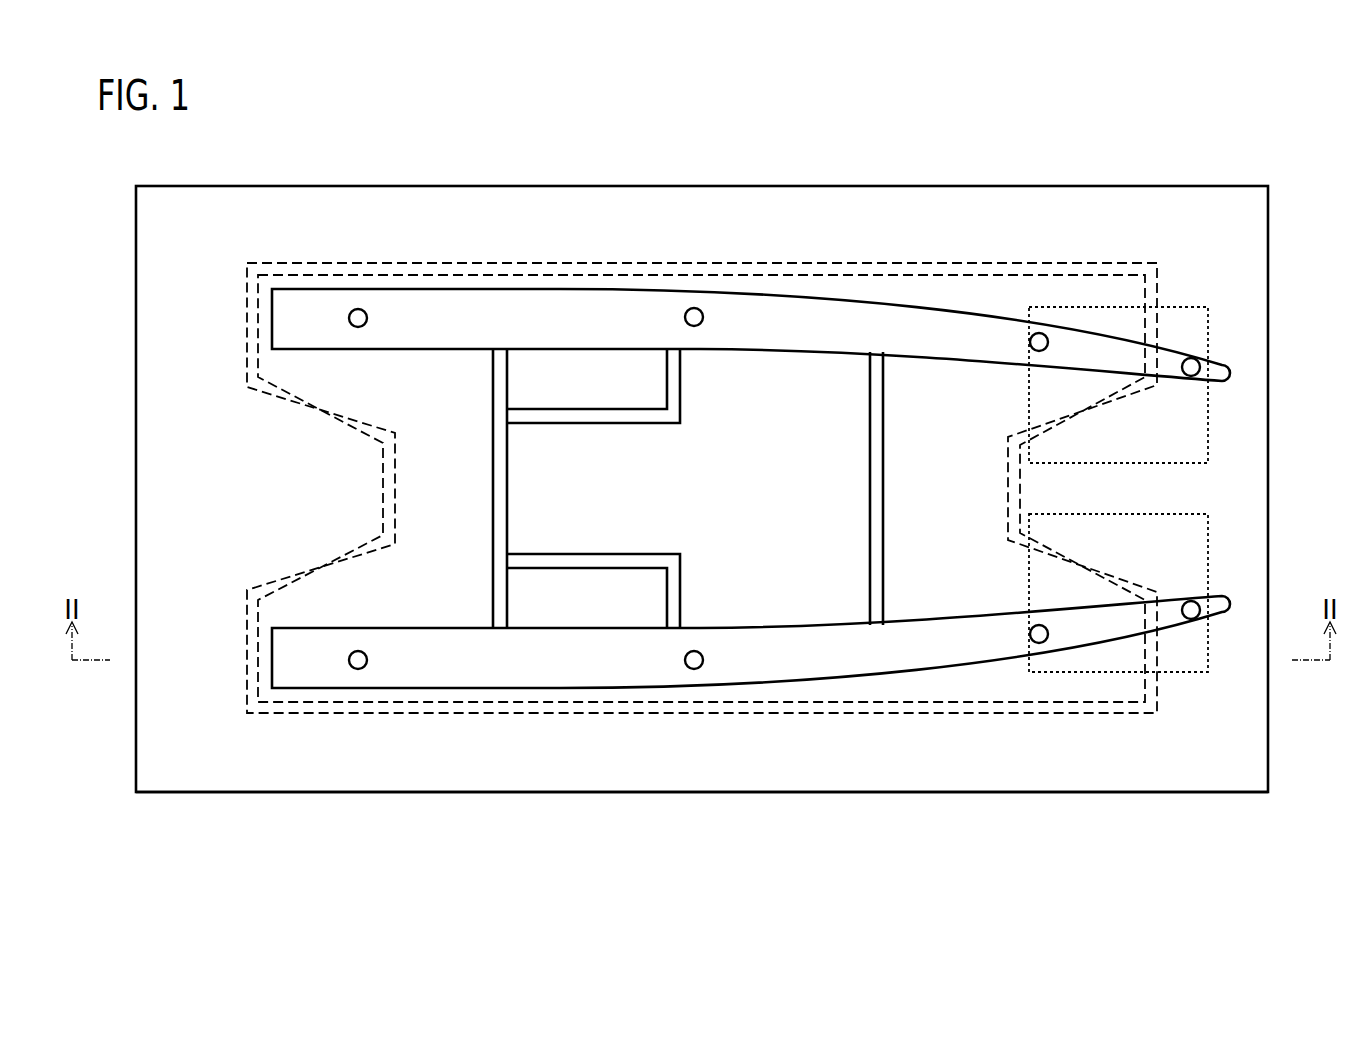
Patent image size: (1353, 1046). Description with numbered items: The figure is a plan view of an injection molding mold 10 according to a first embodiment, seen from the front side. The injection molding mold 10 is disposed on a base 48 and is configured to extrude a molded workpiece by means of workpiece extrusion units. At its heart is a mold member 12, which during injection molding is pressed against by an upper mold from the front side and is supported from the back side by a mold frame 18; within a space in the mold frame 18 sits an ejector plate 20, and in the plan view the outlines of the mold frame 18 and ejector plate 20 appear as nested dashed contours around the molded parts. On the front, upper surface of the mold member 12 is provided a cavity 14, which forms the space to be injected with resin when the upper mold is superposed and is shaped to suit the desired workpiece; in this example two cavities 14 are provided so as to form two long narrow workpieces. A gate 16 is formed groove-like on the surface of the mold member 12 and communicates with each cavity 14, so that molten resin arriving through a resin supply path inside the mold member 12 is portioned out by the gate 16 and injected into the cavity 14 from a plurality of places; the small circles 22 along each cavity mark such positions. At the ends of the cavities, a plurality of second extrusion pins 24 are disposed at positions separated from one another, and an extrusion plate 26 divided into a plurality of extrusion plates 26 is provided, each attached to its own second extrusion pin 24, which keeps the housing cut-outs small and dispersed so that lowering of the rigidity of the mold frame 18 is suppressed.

The injection molding mold 10 is at (248, 123).
The mold member 12 is at (757, 215).
The cavity 14 is at (590, 320).
The gate 16 is at (541, 415).
The mold frame 18 is at (438, 275).
The ejector plate 20 is at (465, 284).
The hole 22 is at (357, 308).
The second extrusion pin 24 is at (1190, 358).
The extrusion plate 26 is at (1208, 455).
The base 48 is at (797, 772).